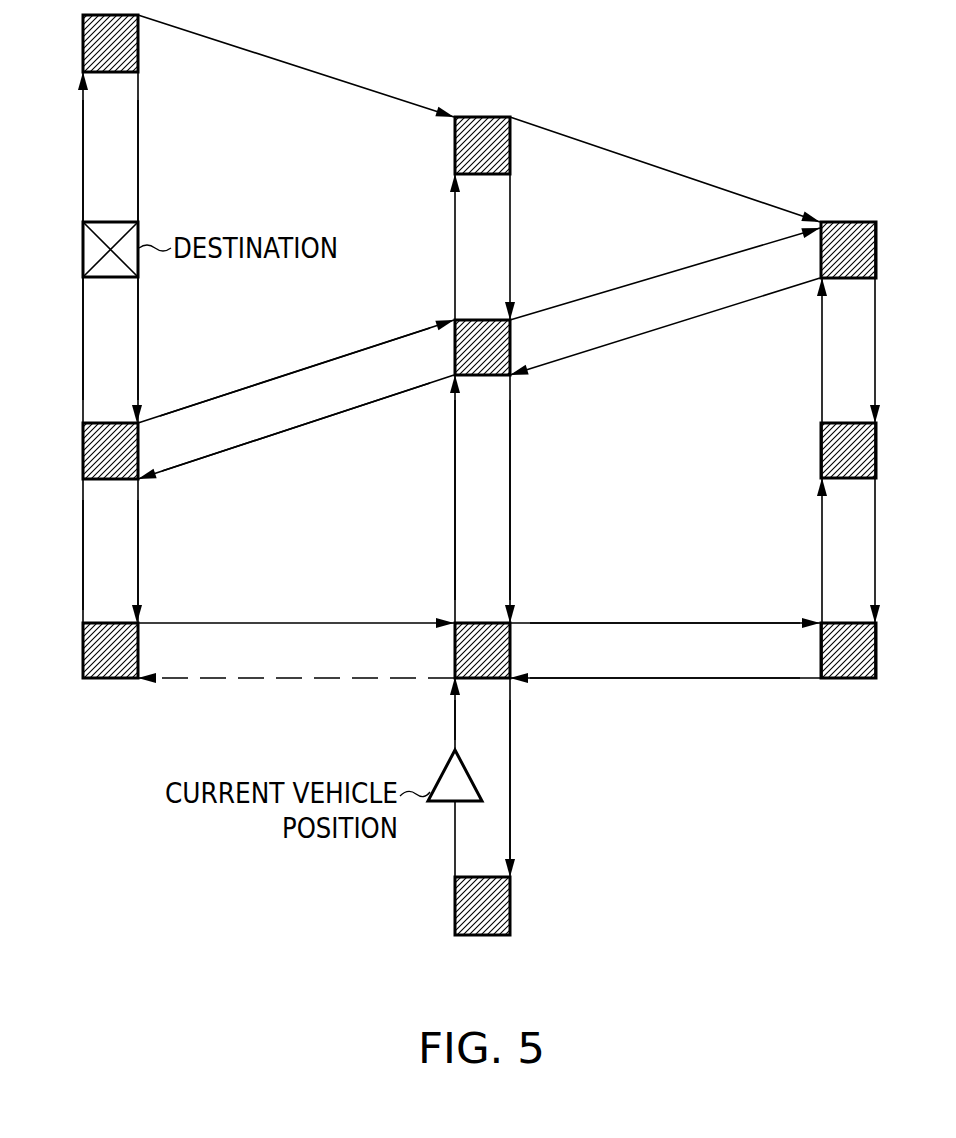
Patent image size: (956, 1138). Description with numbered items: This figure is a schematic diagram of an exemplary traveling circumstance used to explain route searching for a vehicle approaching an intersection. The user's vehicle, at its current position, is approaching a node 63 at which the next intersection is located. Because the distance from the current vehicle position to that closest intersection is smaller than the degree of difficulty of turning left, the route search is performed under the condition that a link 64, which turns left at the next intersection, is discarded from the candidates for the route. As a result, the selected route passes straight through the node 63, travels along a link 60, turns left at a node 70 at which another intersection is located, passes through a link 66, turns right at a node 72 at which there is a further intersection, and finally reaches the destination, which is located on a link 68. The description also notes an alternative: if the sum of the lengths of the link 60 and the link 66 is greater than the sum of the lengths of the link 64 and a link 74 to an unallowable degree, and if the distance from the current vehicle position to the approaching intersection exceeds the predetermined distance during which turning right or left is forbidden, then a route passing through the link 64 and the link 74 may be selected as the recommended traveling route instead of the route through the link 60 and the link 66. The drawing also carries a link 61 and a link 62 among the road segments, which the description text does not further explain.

The link 60 is at (454, 570).
The road link (horizontal road to right intersection) 61 is at (645, 623).
The road link from current vehicle position 62 is at (455, 730).
The node 63 is at (490, 677).
The link 64 is at (197, 679).
The link 66 is at (300, 430).
The link 68 is at (81, 331).
The node 70 is at (481, 375).
The node 72 is at (81, 452).
The link 74 is at (81, 557).